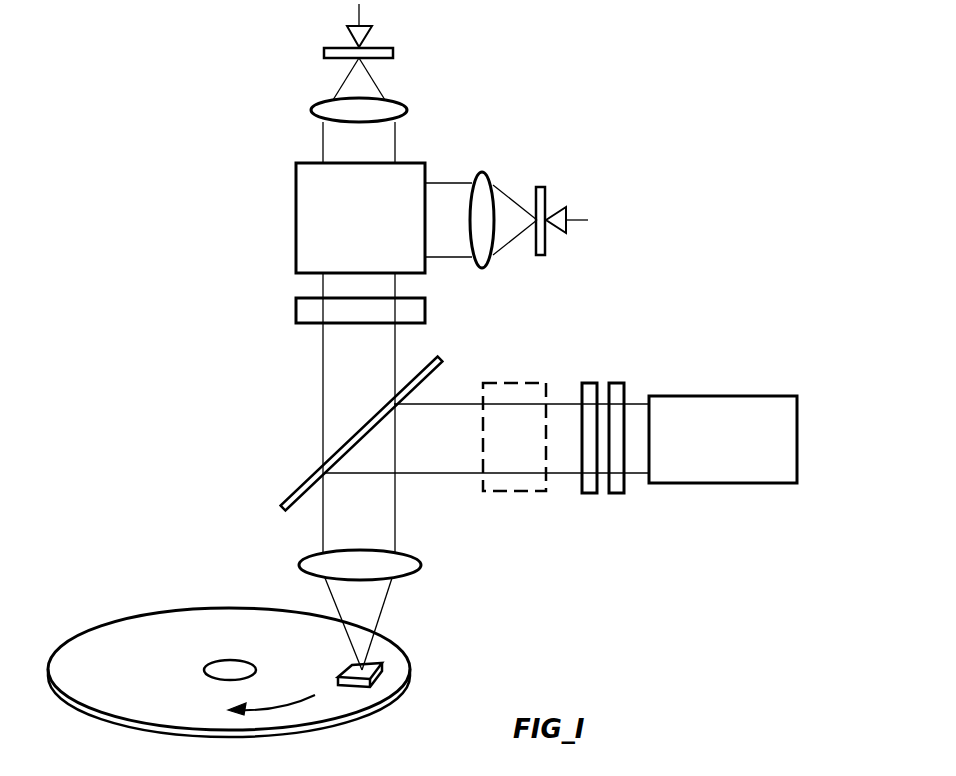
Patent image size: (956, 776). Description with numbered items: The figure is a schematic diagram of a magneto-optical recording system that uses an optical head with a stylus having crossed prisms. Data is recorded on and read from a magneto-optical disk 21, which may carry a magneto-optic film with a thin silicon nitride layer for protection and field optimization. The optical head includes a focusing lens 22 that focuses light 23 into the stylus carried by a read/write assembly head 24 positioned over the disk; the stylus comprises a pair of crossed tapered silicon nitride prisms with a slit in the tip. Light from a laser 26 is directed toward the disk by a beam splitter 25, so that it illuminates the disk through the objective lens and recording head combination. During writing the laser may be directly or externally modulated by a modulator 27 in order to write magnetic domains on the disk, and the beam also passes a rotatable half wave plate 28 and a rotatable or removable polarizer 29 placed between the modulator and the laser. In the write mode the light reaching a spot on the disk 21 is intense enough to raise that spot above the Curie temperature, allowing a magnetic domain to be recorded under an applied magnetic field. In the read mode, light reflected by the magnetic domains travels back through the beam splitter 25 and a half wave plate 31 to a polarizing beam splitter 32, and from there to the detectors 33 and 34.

The magneto-optical disk 21 is at (165, 632).
The focusing lens 22 is at (423, 563).
The light 23 is at (325, 593).
The read/write assembly head 24 is at (383, 665).
The beam splitter 25 is at (297, 478).
The laser 26 is at (725, 485).
The modulator 27 is at (520, 383).
The rotatable half wave plate 28 is at (593, 493).
The rotatable or removable polarizer 29 is at (622, 382).
The half wave plate 31 is at (297, 320).
The polarizing beam splitter 32 is at (297, 205).
The detector 33 is at (380, 44).
The detector 34 is at (547, 200).